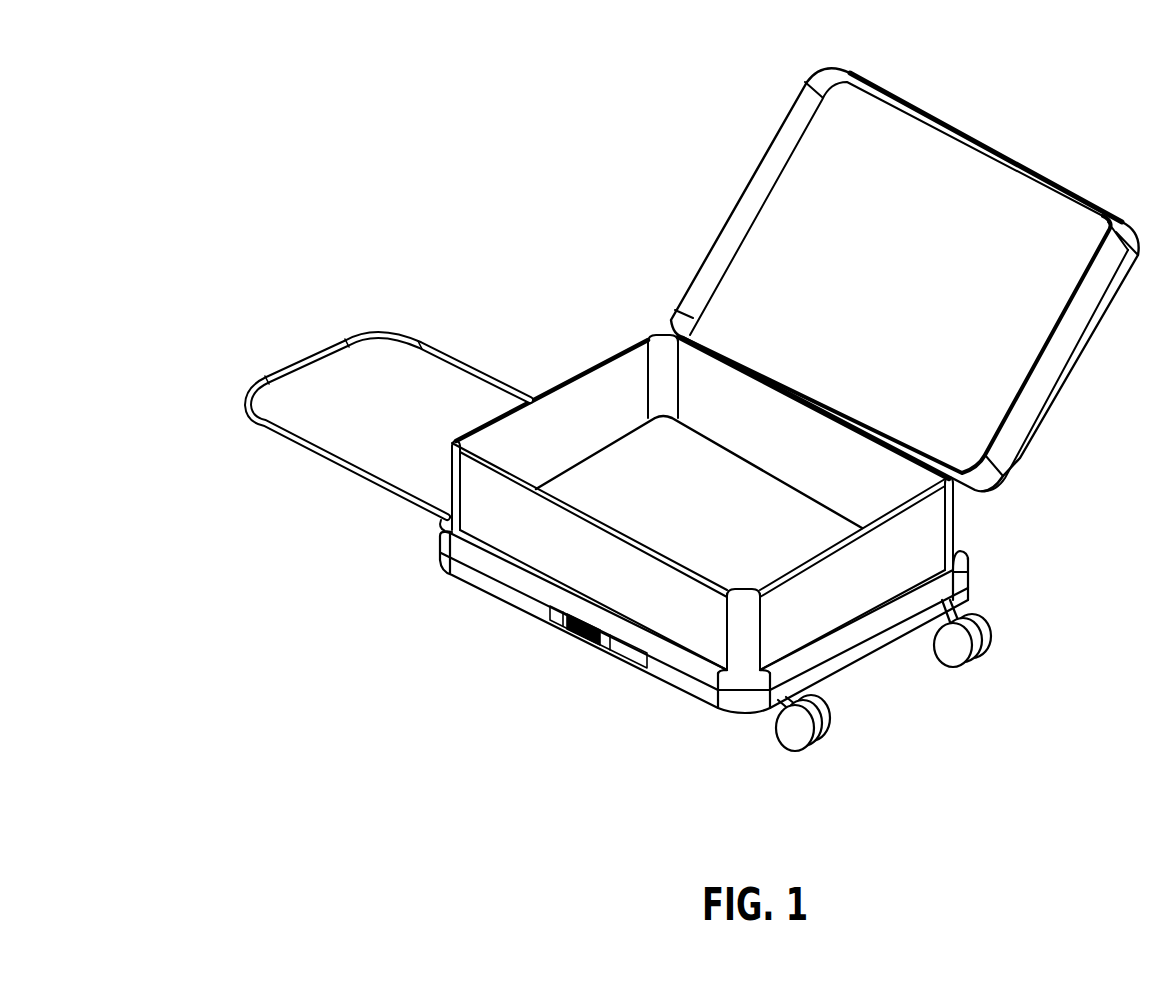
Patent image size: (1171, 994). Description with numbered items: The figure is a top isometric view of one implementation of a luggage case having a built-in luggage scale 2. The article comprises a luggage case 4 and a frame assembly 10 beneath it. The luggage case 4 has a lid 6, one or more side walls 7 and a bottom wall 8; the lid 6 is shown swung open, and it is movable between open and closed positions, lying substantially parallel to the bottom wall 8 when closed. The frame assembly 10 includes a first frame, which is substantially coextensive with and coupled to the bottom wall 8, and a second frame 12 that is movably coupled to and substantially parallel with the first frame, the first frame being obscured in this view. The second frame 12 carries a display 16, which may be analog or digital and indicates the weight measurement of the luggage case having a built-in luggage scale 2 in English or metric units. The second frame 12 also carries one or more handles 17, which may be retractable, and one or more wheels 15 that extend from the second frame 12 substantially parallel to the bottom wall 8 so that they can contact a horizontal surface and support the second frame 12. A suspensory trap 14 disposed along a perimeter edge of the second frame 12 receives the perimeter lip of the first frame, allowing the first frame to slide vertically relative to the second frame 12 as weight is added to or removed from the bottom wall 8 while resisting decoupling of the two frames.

The luggage case having a built-in luggage scale 2 is at (301, 638).
The luggage case 4 is at (636, 289).
The lid 6 is at (840, 188).
The side wall 7 is at (888, 550).
The bottom wall 8 is at (633, 500).
The frame assembly 10 is at (450, 607).
The second frame 12 is at (520, 588).
The suspensory trap 14 is at (437, 525).
The wheel 15 is at (800, 733).
The display 16 is at (570, 630).
The handle 17 is at (377, 330).